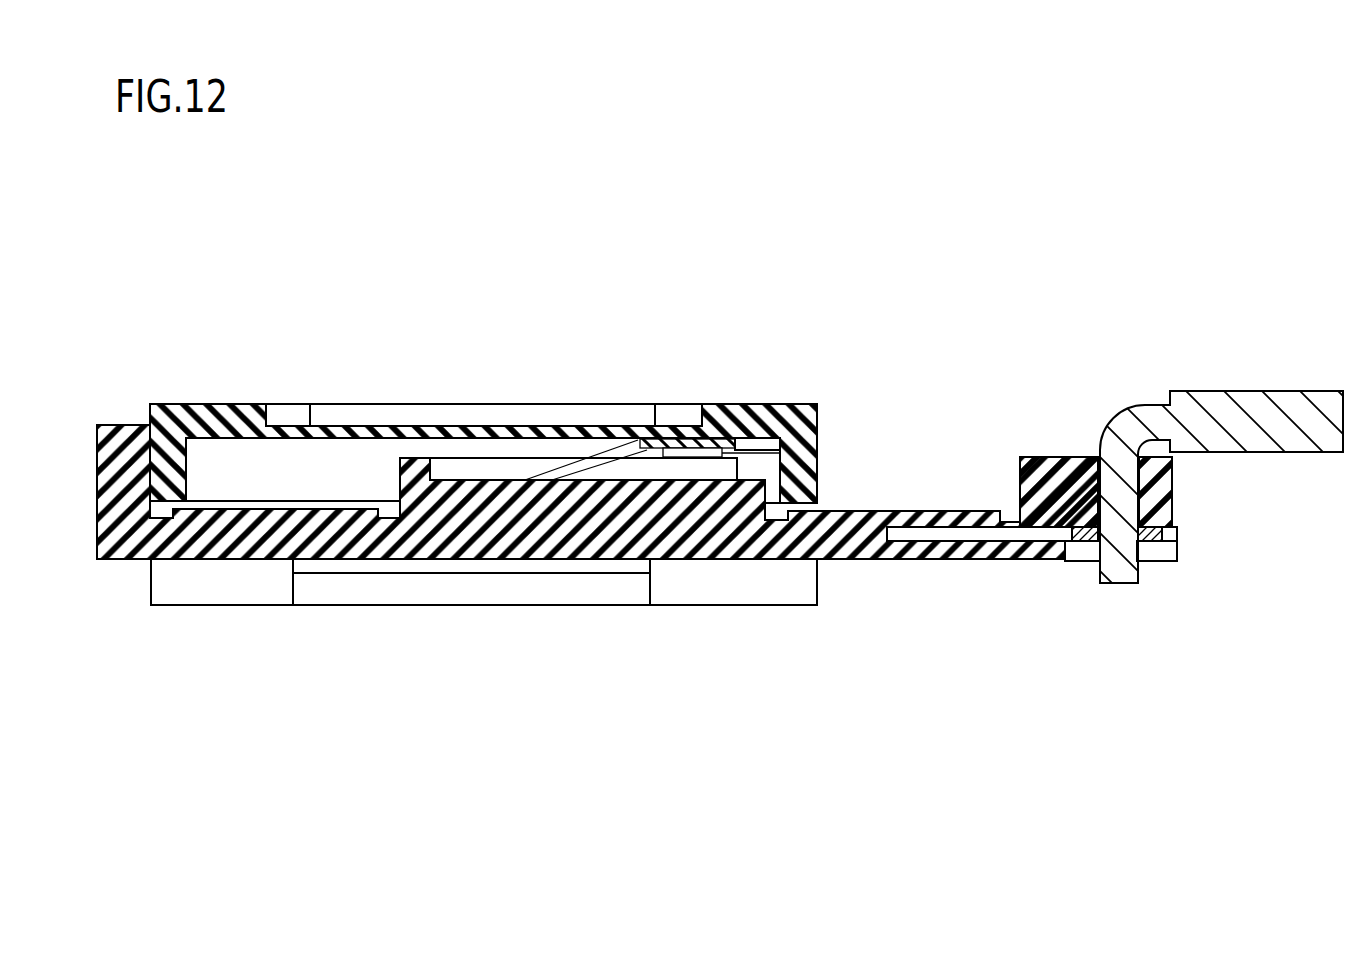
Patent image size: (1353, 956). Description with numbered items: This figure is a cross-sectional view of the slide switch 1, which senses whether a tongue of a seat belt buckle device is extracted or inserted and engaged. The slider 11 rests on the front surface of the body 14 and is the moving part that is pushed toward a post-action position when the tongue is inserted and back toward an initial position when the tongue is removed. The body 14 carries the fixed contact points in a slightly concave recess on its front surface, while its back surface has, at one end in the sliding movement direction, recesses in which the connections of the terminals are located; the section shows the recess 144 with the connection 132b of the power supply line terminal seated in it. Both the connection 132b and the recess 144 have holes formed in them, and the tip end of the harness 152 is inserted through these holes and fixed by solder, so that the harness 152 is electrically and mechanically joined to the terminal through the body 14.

The slide switch 1 is at (1226, 256).
The slider 11 is at (793, 397).
The body 14 is at (1032, 455).
The connection 132b is at (1082, 542).
The recess 144 is at (1153, 542).
The harness 152 is at (1312, 392).